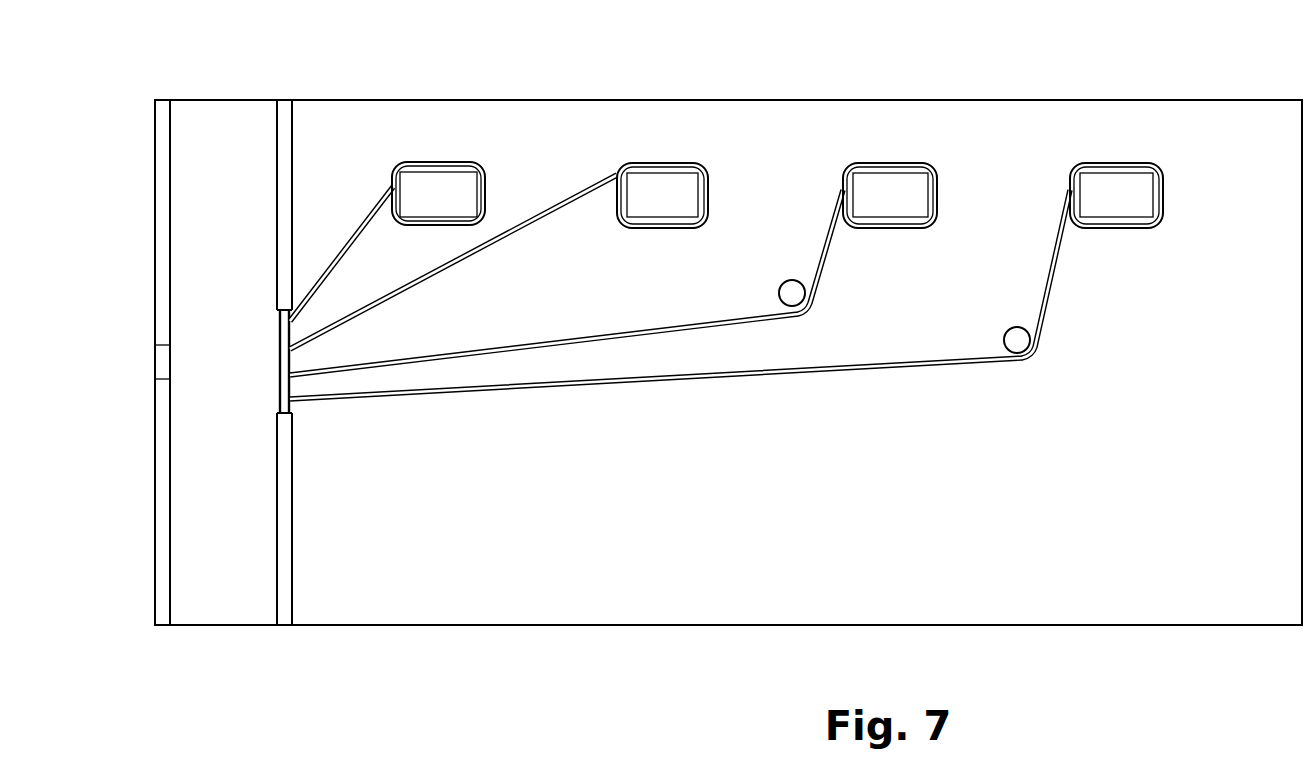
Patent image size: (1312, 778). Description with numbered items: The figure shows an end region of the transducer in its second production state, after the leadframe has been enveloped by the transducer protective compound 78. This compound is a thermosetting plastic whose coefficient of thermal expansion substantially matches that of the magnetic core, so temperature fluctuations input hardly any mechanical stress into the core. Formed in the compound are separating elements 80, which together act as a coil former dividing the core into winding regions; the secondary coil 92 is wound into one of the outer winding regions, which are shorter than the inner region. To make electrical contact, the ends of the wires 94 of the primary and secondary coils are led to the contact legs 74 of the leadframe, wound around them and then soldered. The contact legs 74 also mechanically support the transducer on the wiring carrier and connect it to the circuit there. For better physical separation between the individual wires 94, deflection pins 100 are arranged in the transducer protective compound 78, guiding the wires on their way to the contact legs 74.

The contact legs 74 is at (437, 186).
The transducer protective compound 78 is at (1193, 580).
The separating elements 80 is at (158, 157).
The secondary coil 92 is at (223, 158).
The wires 94 is at (378, 190).
The deflection pins 100 is at (791, 292).